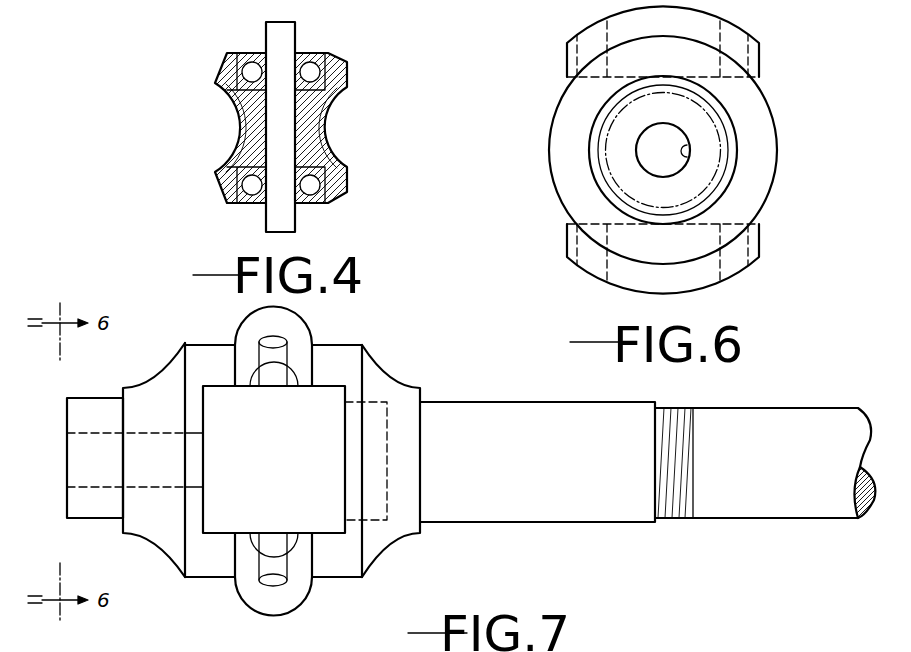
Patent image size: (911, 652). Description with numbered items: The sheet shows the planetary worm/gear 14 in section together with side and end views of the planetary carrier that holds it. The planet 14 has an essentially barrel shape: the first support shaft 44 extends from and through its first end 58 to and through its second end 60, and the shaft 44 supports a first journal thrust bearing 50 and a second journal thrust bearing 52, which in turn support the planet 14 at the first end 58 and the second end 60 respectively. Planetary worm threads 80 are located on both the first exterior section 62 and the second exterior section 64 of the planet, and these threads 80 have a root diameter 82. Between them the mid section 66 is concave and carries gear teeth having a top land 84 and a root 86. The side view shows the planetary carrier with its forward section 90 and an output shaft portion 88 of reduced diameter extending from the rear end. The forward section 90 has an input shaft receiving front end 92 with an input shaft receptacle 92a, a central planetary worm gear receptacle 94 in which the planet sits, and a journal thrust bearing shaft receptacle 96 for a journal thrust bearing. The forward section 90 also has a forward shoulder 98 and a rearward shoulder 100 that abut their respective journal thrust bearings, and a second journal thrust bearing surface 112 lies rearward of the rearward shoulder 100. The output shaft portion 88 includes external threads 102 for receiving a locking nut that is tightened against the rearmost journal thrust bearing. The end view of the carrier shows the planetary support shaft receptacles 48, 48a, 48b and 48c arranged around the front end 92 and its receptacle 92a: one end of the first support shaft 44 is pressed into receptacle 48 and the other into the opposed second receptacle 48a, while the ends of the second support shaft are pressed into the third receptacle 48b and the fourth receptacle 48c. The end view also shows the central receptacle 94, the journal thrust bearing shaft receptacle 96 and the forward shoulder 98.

In FIG. 4, the planetary worm/gear 14 is at (347, 58).
In FIG. 4, the first support shaft 44 is at (278, 42).
In FIG. 4, the first journal thrust bearing 50 is at (310, 68).
In FIG. 4, the second journal thrust bearing 52 is at (310, 186).
In FIG. 4, the first end 58 is at (325, 55).
In FIG. 4, the second end 60 is at (323, 200).
In FIG. 4, the first exterior section 62 is at (347, 87).
In FIG. 4, the second exterior section 64 is at (342, 203).
In FIG. 4, the mid section 66 is at (337, 160).
In FIG. 4, the planetary worm threads 80 is at (337, 60).
In FIG. 4, the root diameter 82 is at (347, 78).
In FIG. 4, the top land 84 is at (323, 143).
In FIG. 4, the root 86 is at (330, 117).
In FIG. 6, the receptacle 48 is at (593, 42).
In FIG. 6, the second receptacle 48a is at (593, 263).
In FIG. 6, the third receptacle 48b is at (735, 38).
In FIG. 7, the third receptacle 48b is at (278, 341).
In FIG. 6, the fourth receptacle 48c is at (733, 258).
In FIG. 7, the fourth receptacle 48c is at (272, 584).
In FIG. 7, the output shaft portion 88 is at (567, 522).
In FIG. 6, the forward section 90 is at (713, 15).
In FIG. 7, the forward section 90 is at (212, 568).
In FIG. 6, the input shaft receiving front end 92 is at (702, 163).
In FIG. 7, the input shaft receiving front end 92 is at (67, 503).
In FIG. 6, the input shaft receptacle 92a is at (684, 147).
In FIG. 7, the input shaft receptacle 92a is at (95, 433).
In FIG. 6, the central planetary worm gear receptacle 94 is at (620, 78).
In FIG. 7, the central planetary worm gear receptacle 94 is at (226, 390).
In FIG. 6, the journal thrust bearing shaft receptacle 96 is at (615, 187).
In FIG. 7, the journal thrust bearing shaft receptacle 96 is at (387, 455).
In FIG. 6, the forward shoulder 98 is at (610, 200).
In FIG. 7, the forward shoulder 98 is at (123, 388).
In FIG. 7, the rearward shoulder 100 is at (422, 398).
In FIG. 7, the external threads 102 is at (678, 435).
In FIG. 7, the second journal thrust bearing surface 112 is at (512, 402).